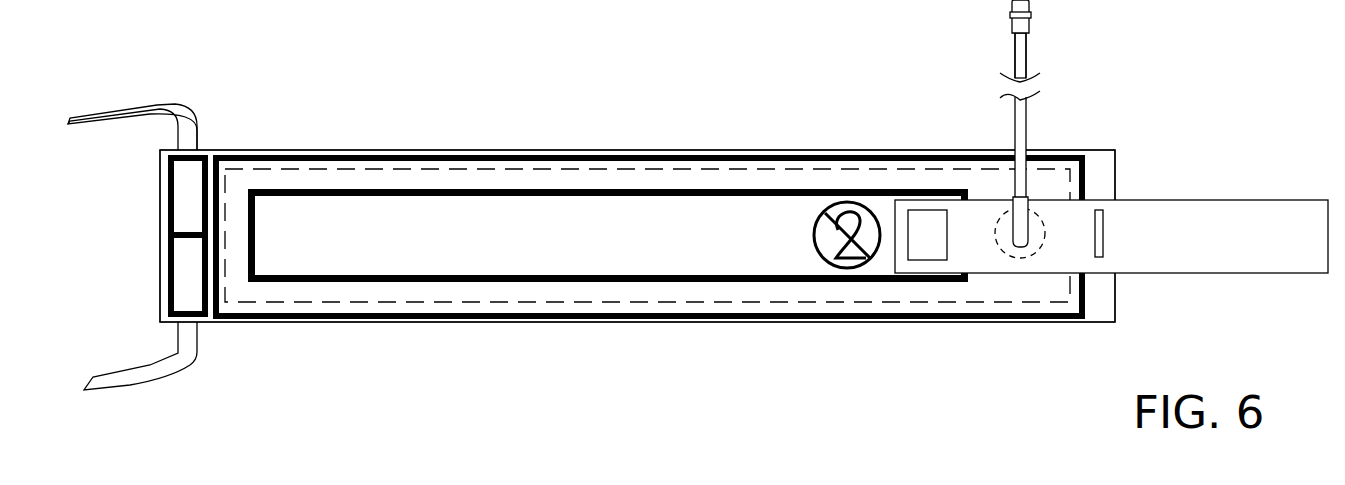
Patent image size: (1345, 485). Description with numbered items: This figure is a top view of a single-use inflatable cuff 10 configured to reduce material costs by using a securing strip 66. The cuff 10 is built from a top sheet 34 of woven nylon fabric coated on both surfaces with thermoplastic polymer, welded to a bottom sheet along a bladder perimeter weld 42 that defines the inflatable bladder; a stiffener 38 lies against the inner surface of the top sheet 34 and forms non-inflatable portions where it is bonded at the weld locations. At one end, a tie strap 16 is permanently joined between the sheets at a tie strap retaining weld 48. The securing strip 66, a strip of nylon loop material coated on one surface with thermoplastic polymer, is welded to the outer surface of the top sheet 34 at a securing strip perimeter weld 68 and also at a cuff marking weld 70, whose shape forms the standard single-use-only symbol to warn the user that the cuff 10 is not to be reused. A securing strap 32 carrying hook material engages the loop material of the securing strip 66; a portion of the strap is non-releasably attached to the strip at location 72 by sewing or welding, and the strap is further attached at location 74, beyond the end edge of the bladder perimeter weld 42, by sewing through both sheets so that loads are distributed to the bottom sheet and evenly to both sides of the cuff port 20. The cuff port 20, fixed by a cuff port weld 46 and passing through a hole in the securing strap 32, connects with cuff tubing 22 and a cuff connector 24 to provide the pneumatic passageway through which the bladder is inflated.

The cuff 10 is at (677, 347).
The tie strap 16 is at (177, 104).
The cuff port 20 is at (1013, 207).
The cuff tubing 22 is at (1025, 128).
The cuff connector 24 is at (1028, 32).
The securing strap 32 is at (1308, 200).
The top sheet 34 is at (497, 323).
The stiffener 38 is at (387, 170).
The bladder perimeter weld 42 is at (758, 152).
The cuff port weld 46 is at (1040, 221).
The tie strap retaining weld 48 is at (205, 153).
The securing strip 66 is at (317, 255).
The securing strip perimeter weld 68 is at (513, 190).
The cuff marking weld 70 is at (817, 242).
The location 72 is at (894, 252).
The location 74 is at (1103, 227).